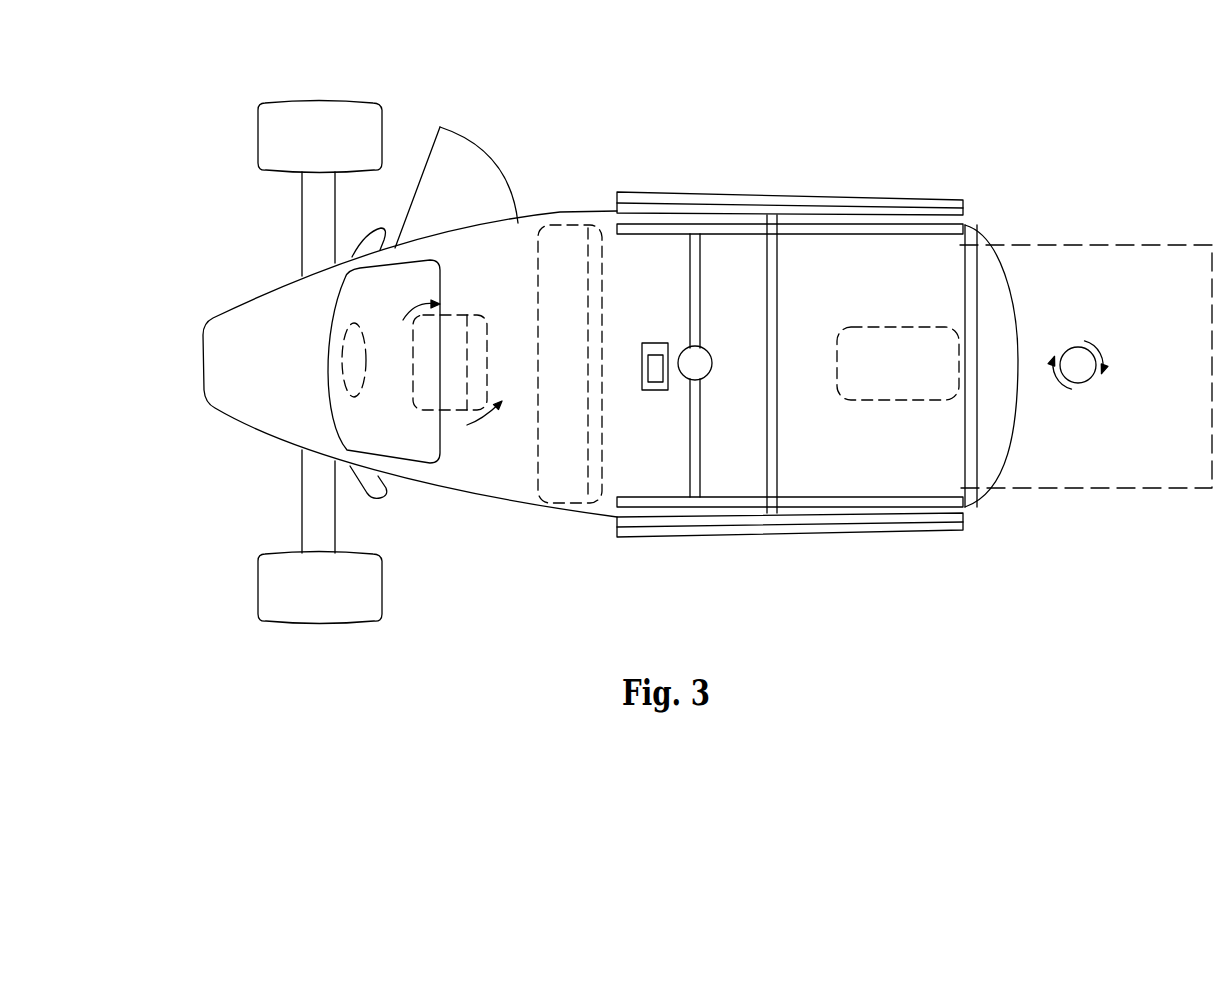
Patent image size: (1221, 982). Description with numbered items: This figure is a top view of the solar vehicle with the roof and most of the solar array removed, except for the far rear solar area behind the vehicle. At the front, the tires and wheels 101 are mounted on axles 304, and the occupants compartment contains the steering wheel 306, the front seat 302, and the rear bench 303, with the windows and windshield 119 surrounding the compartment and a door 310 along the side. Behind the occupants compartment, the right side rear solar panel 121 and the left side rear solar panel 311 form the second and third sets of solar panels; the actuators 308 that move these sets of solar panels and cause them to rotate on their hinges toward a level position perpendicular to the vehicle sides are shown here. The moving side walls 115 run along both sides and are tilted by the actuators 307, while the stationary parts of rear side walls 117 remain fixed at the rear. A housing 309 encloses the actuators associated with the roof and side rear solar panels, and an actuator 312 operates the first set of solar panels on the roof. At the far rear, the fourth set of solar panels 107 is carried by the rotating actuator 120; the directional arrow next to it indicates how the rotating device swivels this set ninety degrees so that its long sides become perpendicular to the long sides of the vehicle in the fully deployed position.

The tires and wheels 101 is at (318, 101).
The axles 304 is at (302, 231).
The steering wheel 306 is at (343, 351).
The windows and windshield 119 is at (397, 306).
The front seat 302 is at (466, 378).
The door 310 is at (484, 144).
The right side rear solar panel(s) 121 is at (643, 218).
The actuators to raise and tilt side solar panels 308 is at (700, 263).
The moving side walls 115 is at (913, 196).
The actuators to tilt side walls 307 is at (777, 303).
The rotating actuator 120 is at (1100, 338).
The fourth set of solar panels 107 is at (1080, 440).
The left side rear solar panel(s) 311 is at (808, 494).
The rear bench 303 is at (538, 403).
The actuator to first set of solar panels 312 is at (643, 376).
The housing for actuators associated with roof and side rear solar panels 309 is at (702, 406).
The stationary parts of rear side walls 117 is at (1008, 472).